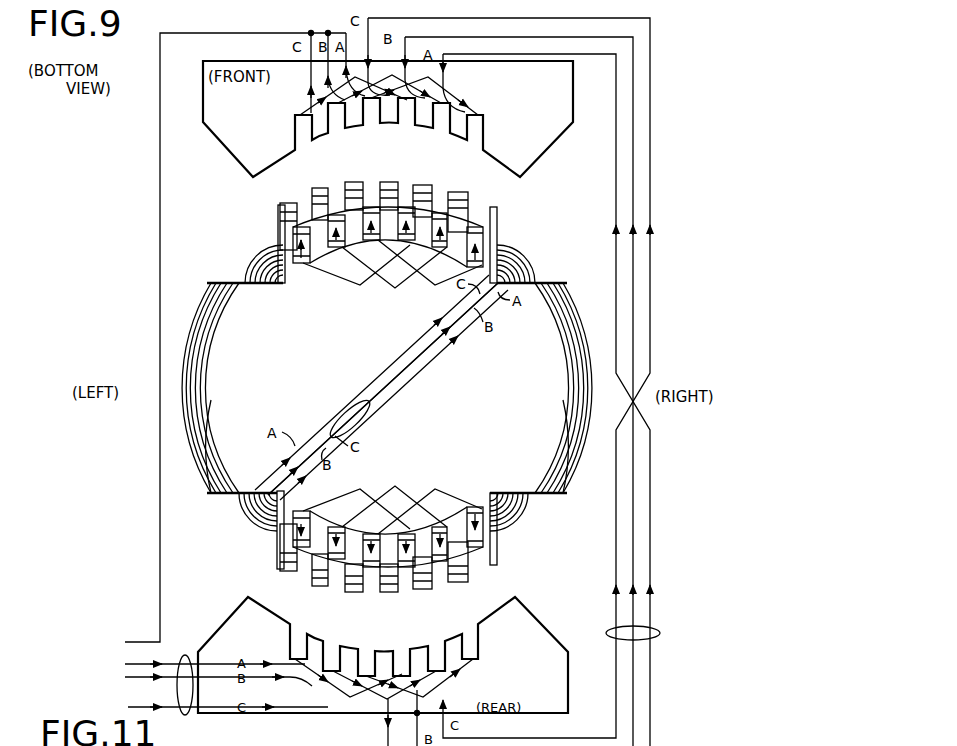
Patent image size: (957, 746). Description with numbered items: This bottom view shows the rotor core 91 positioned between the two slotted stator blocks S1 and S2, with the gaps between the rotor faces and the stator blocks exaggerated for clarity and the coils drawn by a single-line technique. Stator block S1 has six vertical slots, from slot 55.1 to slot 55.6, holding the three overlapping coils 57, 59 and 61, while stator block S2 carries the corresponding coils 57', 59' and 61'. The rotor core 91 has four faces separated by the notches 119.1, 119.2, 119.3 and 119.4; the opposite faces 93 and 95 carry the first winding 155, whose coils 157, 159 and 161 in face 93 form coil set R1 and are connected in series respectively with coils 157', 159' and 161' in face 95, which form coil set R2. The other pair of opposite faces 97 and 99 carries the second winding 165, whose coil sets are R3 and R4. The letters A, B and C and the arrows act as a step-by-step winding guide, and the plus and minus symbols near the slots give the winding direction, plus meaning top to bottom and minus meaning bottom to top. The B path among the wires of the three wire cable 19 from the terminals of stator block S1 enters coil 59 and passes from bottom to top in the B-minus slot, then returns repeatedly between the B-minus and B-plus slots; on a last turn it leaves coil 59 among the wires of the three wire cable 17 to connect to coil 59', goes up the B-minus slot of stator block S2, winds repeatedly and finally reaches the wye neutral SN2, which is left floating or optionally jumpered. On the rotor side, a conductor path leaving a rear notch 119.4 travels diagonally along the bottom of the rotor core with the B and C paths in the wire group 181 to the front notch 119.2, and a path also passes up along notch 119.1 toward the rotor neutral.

The wye neutral SN2 is at (211, 332).
The stator block S2 is at (540, 143).
The stator block S1 is at (526, 699).
The vertical slot 55.1 is at (290, 630).
The vertical slot 55.6 is at (478, 655).
The winding coil 57 is at (346, 701).
The winding coil 59 is at (383, 707).
The winding coil 61 is at (419, 652).
The winding coil 57' is at (444, 97).
The winding coil 59' is at (420, 89).
The winding coil 61' is at (387, 90).
The three wire cable 17 is at (655, 628).
The three wire cable 19 is at (190, 660).
The rotor core 91 is at (505, 438).
The rotor face 93 is at (482, 598).
The rotor face 95 is at (318, 188).
The rotor face 97 is at (570, 472).
The rotor face 99 is at (212, 482).
The notch 119.1 is at (496, 525).
The notch 119.2 is at (500, 256).
The notch 119.3 is at (268, 258).
The notch 119.4 is at (272, 520).
The coil set R1 is at (295, 550).
The coil set R2 is at (497, 218).
The coil set R3 is at (258, 275).
The coil set R4 is at (516, 503).
The first winding 155 is at (318, 480).
The coil 157 is at (417, 499).
The coil 159 is at (394, 496).
The coil 161 is at (398, 499).
The coil 157' is at (430, 279).
The coil 159' is at (394, 282).
The coil 161' is at (349, 279).
The second winding 165 is at (488, 354).
The wire group 181 is at (332, 386).